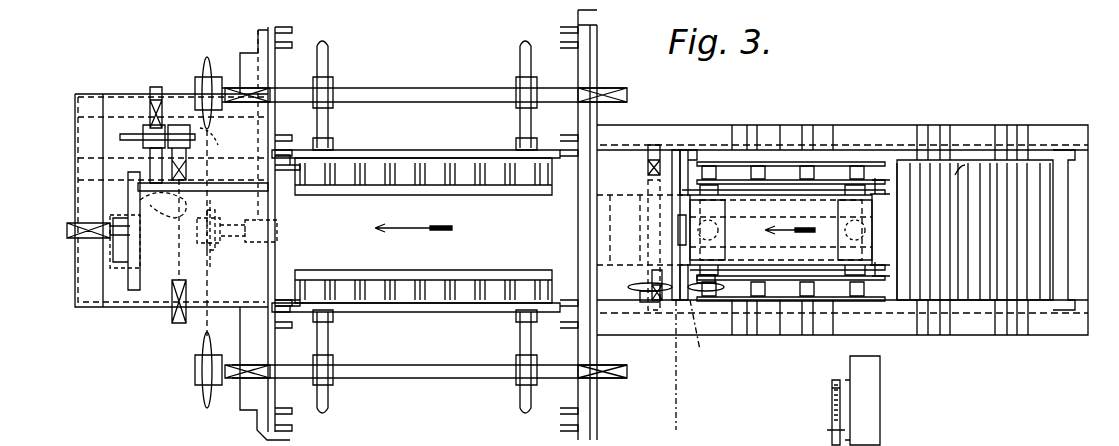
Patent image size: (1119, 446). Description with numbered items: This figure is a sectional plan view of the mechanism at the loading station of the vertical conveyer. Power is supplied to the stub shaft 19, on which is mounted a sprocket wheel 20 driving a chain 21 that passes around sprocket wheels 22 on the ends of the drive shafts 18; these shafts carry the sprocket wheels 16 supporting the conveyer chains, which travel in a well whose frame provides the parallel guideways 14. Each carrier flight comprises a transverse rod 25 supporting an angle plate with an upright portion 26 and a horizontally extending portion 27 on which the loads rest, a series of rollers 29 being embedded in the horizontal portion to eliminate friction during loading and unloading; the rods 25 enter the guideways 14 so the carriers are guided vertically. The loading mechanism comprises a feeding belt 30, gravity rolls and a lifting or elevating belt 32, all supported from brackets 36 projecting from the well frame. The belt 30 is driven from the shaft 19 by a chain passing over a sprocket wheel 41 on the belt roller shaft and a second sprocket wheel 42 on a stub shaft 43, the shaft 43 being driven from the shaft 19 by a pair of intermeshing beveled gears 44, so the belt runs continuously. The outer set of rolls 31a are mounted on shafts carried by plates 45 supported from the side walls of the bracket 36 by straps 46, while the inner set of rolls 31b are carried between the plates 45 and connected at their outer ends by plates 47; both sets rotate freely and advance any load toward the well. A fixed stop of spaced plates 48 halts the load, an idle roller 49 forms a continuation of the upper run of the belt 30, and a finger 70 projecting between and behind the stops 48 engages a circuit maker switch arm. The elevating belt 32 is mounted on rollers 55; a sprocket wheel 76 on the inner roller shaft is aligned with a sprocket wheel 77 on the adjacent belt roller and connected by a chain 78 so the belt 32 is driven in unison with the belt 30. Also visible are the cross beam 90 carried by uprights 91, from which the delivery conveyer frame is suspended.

The guideways 14 is at (285, 30).
The sprocket wheels 16 is at (330, 60).
The drive shafts 18 is at (412, 92).
The stub shaft 19 is at (65, 232).
The sprocket wheel 20 is at (210, 220).
The chain 21 is at (171, 200).
The sprocket wheels 22 is at (205, 66).
The transverse rod 25 is at (283, 170).
The upright portion 26 is at (350, 152).
The horizontally extending portion 27 is at (368, 188).
The rollers 29 is at (410, 178).
The feeding belt 30 is at (413, 243).
The outer set of rolls 31a is at (960, 172).
The inner set of rolls 31b is at (762, 168).
The lifting or elevating belt 32 is at (783, 230).
The brackets 36 is at (650, 330).
The sprocket wheel 41 is at (178, 125).
The sprocket wheel 42 is at (125, 130).
The stub shaft 43 is at (150, 162).
The beveled gears 44 is at (120, 210).
The plates 45 is at (843, 160).
The straps 46 is at (808, 128).
The plates 47 is at (855, 160).
The stop plates 48 is at (688, 165).
The idle roller 49 is at (675, 220).
The rollers 55 is at (880, 232).
The finger 70 is at (676, 150).
The sprocket wheel 76 is at (708, 292).
The sprocket wheel 77 is at (636, 290).
The chain 78 is at (697, 345).
The cross beam 90 is at (838, 382).
The uprights 91 is at (860, 407).